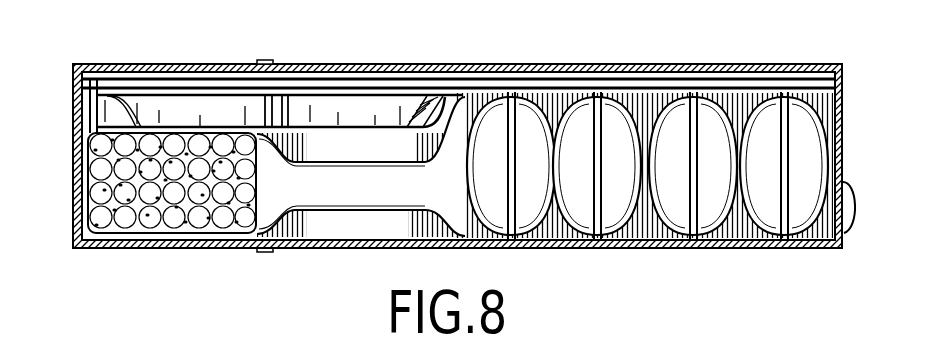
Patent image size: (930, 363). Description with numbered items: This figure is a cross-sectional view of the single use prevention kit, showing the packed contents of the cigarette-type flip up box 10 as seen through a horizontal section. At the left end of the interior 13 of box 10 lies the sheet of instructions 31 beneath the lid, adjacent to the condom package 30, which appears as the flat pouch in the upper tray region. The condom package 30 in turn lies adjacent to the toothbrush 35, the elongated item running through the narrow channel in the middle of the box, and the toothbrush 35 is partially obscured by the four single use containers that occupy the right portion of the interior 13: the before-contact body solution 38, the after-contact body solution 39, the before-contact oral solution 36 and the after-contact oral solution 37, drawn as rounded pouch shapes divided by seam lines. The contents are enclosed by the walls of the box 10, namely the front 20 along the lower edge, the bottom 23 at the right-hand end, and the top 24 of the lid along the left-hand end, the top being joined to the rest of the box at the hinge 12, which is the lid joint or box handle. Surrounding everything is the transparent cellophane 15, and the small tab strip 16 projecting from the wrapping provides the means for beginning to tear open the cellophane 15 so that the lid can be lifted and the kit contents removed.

The flip up box 10 is at (87, 64).
The lid joint or box handle 12 is at (147, 67).
The interior 13 is at (361, 147).
The cellophane seal 15 is at (415, 61).
The tab strip 16 is at (262, 60).
The front of box 20 is at (383, 251).
The bottom of box 23 is at (828, 243).
The top of box lid 24 is at (70, 179).
The condom package 30 is at (181, 108).
The sheet of instructions 31 is at (314, 87).
The toothbrush 35 is at (330, 192).
The before-contact oral solution 36 is at (710, 117).
The after-contact oral solution 37 is at (800, 117).
The before-contact body solution 38 is at (493, 118).
The after-contact body solution 39 is at (615, 117).